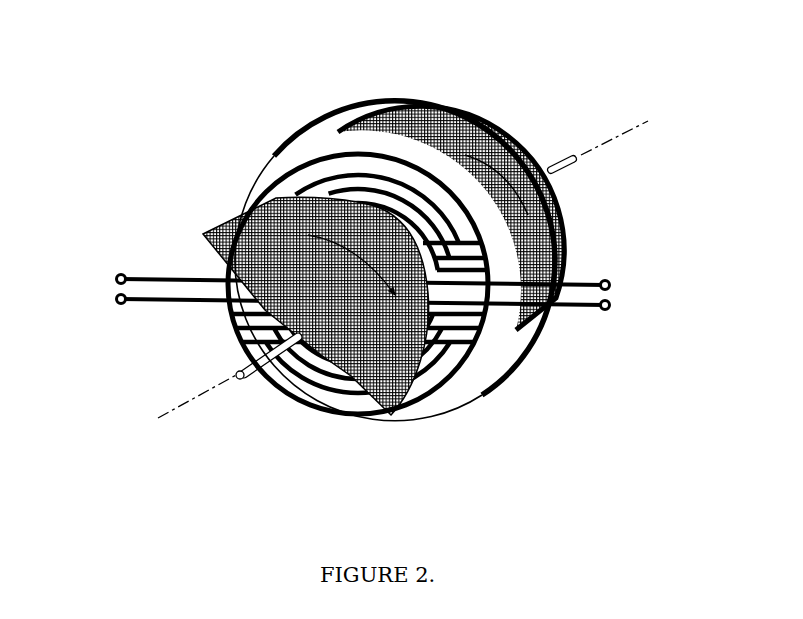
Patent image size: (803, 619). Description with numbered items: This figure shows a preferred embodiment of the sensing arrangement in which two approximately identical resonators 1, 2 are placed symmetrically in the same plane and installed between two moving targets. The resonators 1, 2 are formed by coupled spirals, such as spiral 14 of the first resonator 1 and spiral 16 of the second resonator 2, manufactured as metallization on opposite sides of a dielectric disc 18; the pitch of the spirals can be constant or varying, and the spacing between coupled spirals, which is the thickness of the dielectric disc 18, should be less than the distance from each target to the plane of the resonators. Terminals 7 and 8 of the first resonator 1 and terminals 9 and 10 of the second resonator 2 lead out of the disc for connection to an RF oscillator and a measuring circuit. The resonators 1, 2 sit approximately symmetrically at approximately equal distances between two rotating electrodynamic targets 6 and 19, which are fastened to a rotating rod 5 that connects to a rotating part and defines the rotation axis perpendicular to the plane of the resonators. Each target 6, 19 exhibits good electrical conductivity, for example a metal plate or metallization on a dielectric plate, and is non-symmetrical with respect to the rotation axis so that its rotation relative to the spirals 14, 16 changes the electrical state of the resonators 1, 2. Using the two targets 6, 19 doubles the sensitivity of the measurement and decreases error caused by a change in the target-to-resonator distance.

The resonator 1 is at (307, 114).
The resonator 2 is at (378, 437).
The rotating rod 5 is at (225, 366).
The electrodynamic target 6 is at (355, 395).
The terminal 7 is at (109, 266).
The terminal 8 is at (111, 297).
The terminal 9 is at (599, 271).
The terminal 10 is at (603, 300).
The spiral 14 is at (343, 192).
The spiral 16 is at (440, 400).
The dielectric disc 18 is at (237, 165).
The rotating target 19 is at (430, 103).